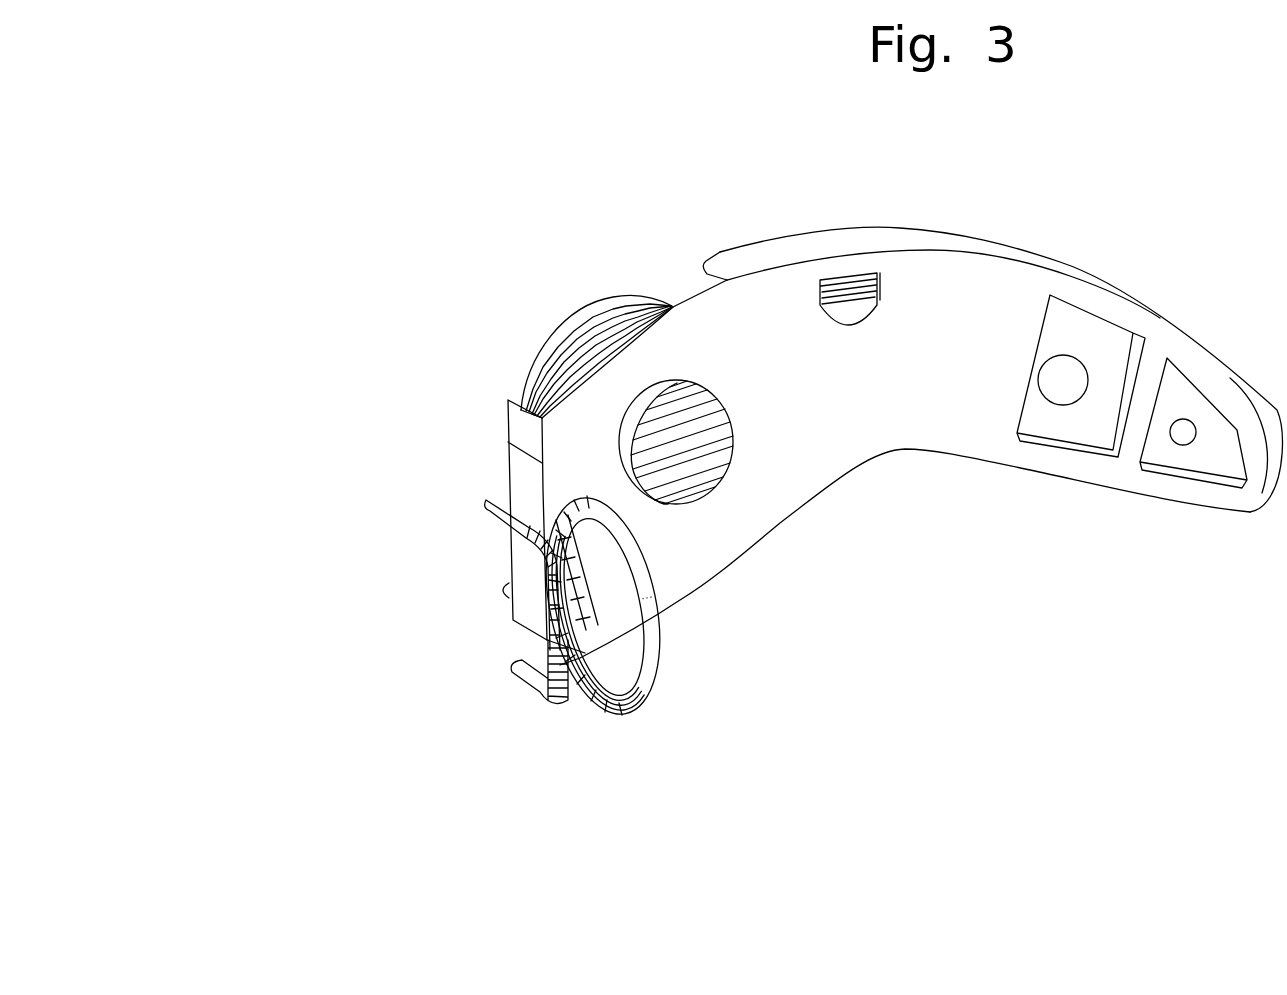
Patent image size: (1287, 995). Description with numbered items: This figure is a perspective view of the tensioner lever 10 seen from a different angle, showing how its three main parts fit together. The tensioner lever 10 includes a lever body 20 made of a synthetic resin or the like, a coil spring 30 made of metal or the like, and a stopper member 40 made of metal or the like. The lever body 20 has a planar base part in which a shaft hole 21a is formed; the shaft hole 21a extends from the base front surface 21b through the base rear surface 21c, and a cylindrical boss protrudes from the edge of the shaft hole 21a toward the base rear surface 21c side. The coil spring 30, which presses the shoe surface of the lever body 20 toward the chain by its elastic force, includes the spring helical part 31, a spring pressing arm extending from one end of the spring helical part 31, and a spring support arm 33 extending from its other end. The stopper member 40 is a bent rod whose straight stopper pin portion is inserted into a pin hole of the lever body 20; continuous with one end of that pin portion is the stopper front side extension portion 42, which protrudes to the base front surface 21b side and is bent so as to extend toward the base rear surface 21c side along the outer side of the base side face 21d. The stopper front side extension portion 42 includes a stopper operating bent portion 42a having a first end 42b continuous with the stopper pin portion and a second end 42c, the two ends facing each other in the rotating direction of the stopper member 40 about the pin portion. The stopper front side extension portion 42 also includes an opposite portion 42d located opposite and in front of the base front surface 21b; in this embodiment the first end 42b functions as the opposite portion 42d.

The tensioner lever 10 is at (306, 146).
The lever body 20 is at (1007, 312).
The shaft hole 21a is at (735, 480).
The base front surface 21b is at (910, 443).
The base rear surface 21c is at (726, 208).
The base side face 21d is at (527, 478).
The coil spring 30 is at (530, 325).
The spring helical part 31 is at (577, 330).
The spring support arm 33 is at (520, 687).
The stopper member 40 is at (650, 755).
The stopper front side extension portion 42 is at (687, 727).
The stopper operating bent portion 42a is at (657, 663).
The first end 42b is at (600, 580).
The second end 42c is at (600, 580).
The opposite portion 42d is at (714, 605).